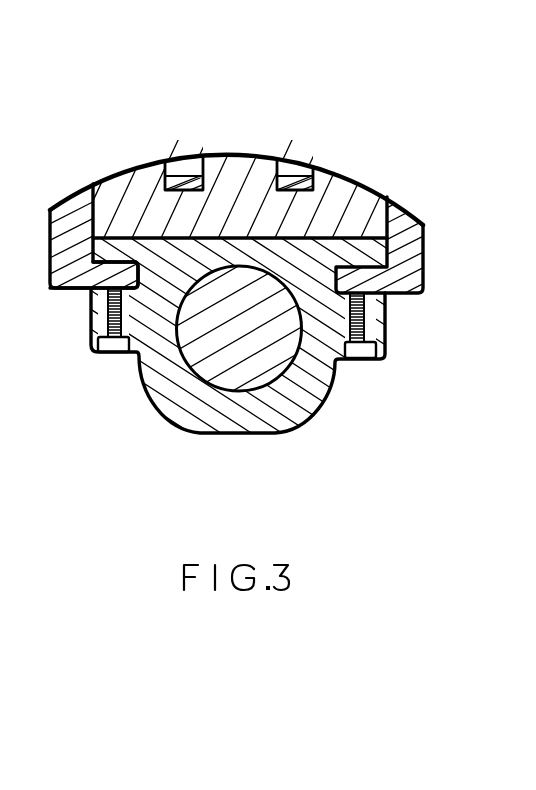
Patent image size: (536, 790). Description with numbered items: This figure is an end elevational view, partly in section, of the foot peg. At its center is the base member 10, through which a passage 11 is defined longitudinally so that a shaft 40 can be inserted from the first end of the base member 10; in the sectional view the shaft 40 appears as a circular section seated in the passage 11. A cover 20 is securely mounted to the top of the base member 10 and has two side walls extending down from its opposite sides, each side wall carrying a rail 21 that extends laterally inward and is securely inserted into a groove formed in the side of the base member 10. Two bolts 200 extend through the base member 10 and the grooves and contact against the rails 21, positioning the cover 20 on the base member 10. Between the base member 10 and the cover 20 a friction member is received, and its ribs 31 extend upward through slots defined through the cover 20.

The base member 10 is at (331, 432).
The passage 11 is at (529, 481).
The cover 20 is at (441, 238).
The rail 21 is at (108, 274).
The rib 31 is at (345, 170).
The shaft 40 is at (220, 365).
The bolt 200 is at (366, 328).